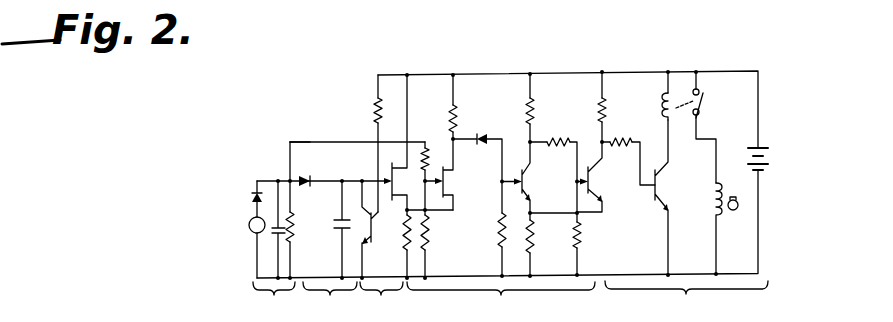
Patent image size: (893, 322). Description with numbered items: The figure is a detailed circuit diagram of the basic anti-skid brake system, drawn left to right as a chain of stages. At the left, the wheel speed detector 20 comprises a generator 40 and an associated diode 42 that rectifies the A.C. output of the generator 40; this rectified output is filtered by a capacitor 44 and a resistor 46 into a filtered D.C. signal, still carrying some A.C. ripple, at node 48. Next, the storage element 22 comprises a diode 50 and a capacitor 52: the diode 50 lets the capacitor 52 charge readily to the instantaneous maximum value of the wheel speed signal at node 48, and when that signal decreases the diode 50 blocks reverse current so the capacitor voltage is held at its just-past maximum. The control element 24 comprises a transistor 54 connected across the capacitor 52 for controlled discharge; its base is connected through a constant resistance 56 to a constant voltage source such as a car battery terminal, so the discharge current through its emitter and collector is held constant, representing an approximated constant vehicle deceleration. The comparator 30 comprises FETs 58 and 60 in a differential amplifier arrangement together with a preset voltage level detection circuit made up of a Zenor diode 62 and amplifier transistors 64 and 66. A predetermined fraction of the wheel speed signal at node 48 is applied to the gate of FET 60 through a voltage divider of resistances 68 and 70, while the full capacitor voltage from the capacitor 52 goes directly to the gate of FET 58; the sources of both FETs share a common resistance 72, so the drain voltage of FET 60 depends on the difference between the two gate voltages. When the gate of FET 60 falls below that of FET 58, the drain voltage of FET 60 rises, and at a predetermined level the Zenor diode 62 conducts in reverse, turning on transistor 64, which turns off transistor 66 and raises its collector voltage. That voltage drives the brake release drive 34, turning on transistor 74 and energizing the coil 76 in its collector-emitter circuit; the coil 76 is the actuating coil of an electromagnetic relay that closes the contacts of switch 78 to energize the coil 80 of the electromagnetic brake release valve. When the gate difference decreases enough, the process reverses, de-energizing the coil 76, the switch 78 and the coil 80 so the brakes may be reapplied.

The wheel speed detector 20 is at (274, 301).
The storage element 22 is at (330, 301).
The control element 24 is at (381, 301).
The comparator 30 is at (501, 301).
The brake release drive 34 is at (686, 300).
The generator 40 is at (248, 226).
The diode 42 is at (250, 198).
The capacitor 44 is at (274, 236).
The resistor 46 is at (294, 222).
The node 48 is at (289, 180).
The diode 50 is at (306, 177).
The capacitor 52 is at (335, 234).
The transistor 54 is at (379, 229).
The constant resistance 56 is at (374, 108).
The FET 58 is at (398, 162).
The FET 60 is at (463, 141).
The Zenor diode 62 is at (483, 134).
The amplifier transistor 64 is at (551, 175).
The amplifier transistor 66 is at (616, 141).
The resistance 68 is at (438, 127).
The resistance 70 is at (431, 228).
The common resistance 72 is at (405, 240).
The transistor 74 is at (660, 203).
The coil 76 is at (665, 106).
The switch 78 is at (704, 104).
The coil 80 is at (715, 204).